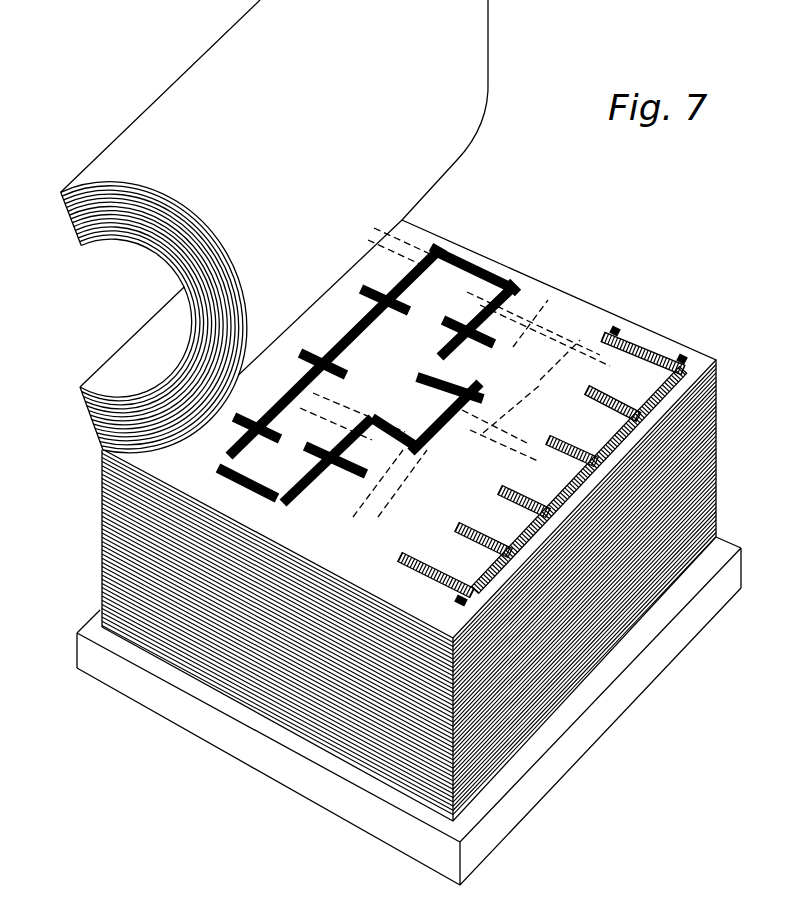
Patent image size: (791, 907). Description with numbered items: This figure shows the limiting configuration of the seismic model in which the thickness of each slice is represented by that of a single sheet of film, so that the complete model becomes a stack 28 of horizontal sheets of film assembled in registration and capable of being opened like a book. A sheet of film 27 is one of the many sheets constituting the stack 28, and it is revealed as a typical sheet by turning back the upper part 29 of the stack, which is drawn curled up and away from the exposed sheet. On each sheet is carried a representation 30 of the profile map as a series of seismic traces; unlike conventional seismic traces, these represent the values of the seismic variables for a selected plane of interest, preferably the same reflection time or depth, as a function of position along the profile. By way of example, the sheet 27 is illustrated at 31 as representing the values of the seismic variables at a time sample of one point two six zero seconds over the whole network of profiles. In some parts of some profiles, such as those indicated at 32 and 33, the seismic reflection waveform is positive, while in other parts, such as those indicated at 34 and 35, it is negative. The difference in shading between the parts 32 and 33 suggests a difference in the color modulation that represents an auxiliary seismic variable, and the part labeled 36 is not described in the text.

The sheet of film 27 is at (652, 338).
The stack 28 is at (700, 470).
The upper part of the stack 29 is at (170, 234).
The representation of the profile map 30 is at (470, 465).
The time sample indication 31 is at (388, 590).
The profile part with positive waveform 32 is at (428, 435).
The profile part with positive waveform 33 is at (598, 440).
The profile part with negative waveform 34 is at (385, 391).
The profile part with negative waveform 35 is at (556, 373).
The bottom hatched strip 36 is at (461, 561).